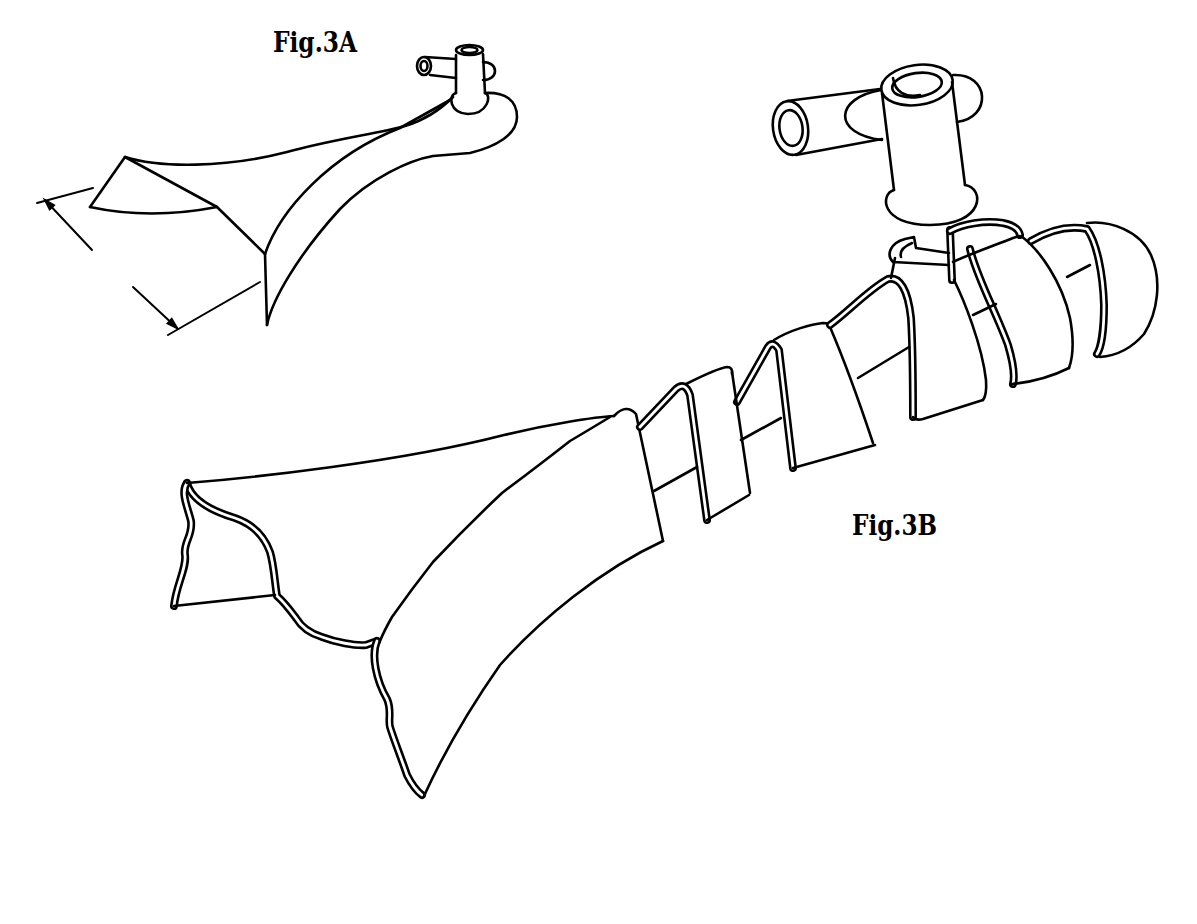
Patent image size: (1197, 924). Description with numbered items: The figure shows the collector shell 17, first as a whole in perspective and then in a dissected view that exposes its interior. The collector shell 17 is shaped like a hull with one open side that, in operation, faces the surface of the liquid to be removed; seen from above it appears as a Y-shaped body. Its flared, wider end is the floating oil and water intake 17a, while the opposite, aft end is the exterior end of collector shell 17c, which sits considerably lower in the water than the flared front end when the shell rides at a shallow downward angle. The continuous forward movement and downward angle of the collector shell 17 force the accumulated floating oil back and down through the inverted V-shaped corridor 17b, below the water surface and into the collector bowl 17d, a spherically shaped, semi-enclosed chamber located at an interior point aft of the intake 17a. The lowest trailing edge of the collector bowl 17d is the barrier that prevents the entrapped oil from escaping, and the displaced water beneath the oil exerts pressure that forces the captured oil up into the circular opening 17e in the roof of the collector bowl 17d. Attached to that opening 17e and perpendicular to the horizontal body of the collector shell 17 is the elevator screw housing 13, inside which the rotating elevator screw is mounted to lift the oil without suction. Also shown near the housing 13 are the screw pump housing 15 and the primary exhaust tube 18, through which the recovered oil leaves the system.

In FIG. 3B, the elevator screw housing 13 is at (967, 165).
In FIG. 3B, the screw pump housing 15 is at (808, 95).
In FIG. 3B, the primary exhaust tube 18 is at (865, 123).
In FIG. 3A, the collector shell 17 is at (263, 172).
In FIG. 3B, the collector shell 17 is at (467, 672).
In FIG. 3A, the floating oil and water intake 17a is at (148, 261).
In FIG. 3B, the inverted V-shaped corridor 17b is at (763, 374).
In FIG. 3B, the exterior end of collector shell 17c is at (1110, 220).
In FIG. 3B, the collector bowl 17d is at (1079, 256).
In FIG. 3B, the circular opening 17e is at (980, 237).